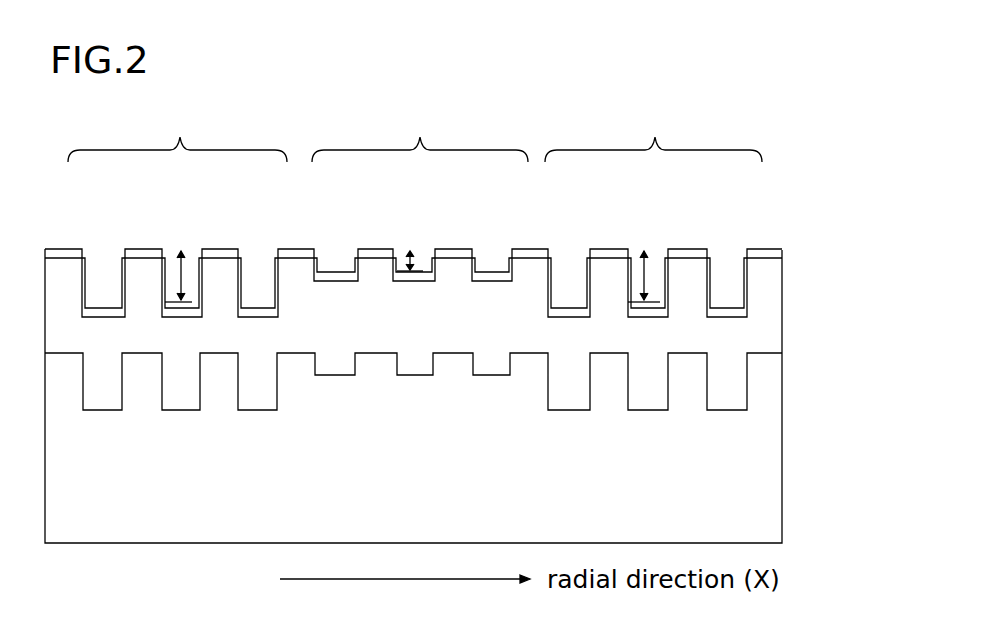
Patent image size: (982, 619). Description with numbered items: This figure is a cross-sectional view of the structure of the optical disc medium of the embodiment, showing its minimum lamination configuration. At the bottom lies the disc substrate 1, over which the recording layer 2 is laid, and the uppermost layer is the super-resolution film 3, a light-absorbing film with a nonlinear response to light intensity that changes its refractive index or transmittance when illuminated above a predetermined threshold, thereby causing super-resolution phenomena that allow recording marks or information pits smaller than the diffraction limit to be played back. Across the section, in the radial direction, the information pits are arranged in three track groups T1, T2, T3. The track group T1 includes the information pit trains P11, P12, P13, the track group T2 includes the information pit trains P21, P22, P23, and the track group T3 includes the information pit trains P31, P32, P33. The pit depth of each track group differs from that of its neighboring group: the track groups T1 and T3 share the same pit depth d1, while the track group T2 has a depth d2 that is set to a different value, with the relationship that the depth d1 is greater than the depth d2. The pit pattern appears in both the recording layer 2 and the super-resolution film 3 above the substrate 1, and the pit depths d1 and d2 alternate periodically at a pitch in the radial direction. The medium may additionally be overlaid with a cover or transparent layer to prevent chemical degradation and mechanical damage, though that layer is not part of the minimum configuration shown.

The disc substrate 1 is at (768, 383).
The recording layer 2 is at (767, 285).
The super-resolution film 3 is at (782, 250).
The track group T1 is at (177, 130).
The track group T2 is at (420, 130).
The track group T3 is at (653, 130).
The information pit train P11 is at (111, 184).
The information pit train P12 is at (187, 184).
The information pit train P13 is at (263, 184).
The information pit train P21 is at (349, 184).
The information pit train P22 is at (419, 184).
The information pit train P23 is at (492, 184).
The information pit train P31 is at (576, 184).
The information pit train P32 is at (649, 184).
The information pit train P33 is at (726, 184).
The pit depth d1 is at (412, 258).
The pit depth d2 is at (413, 244).